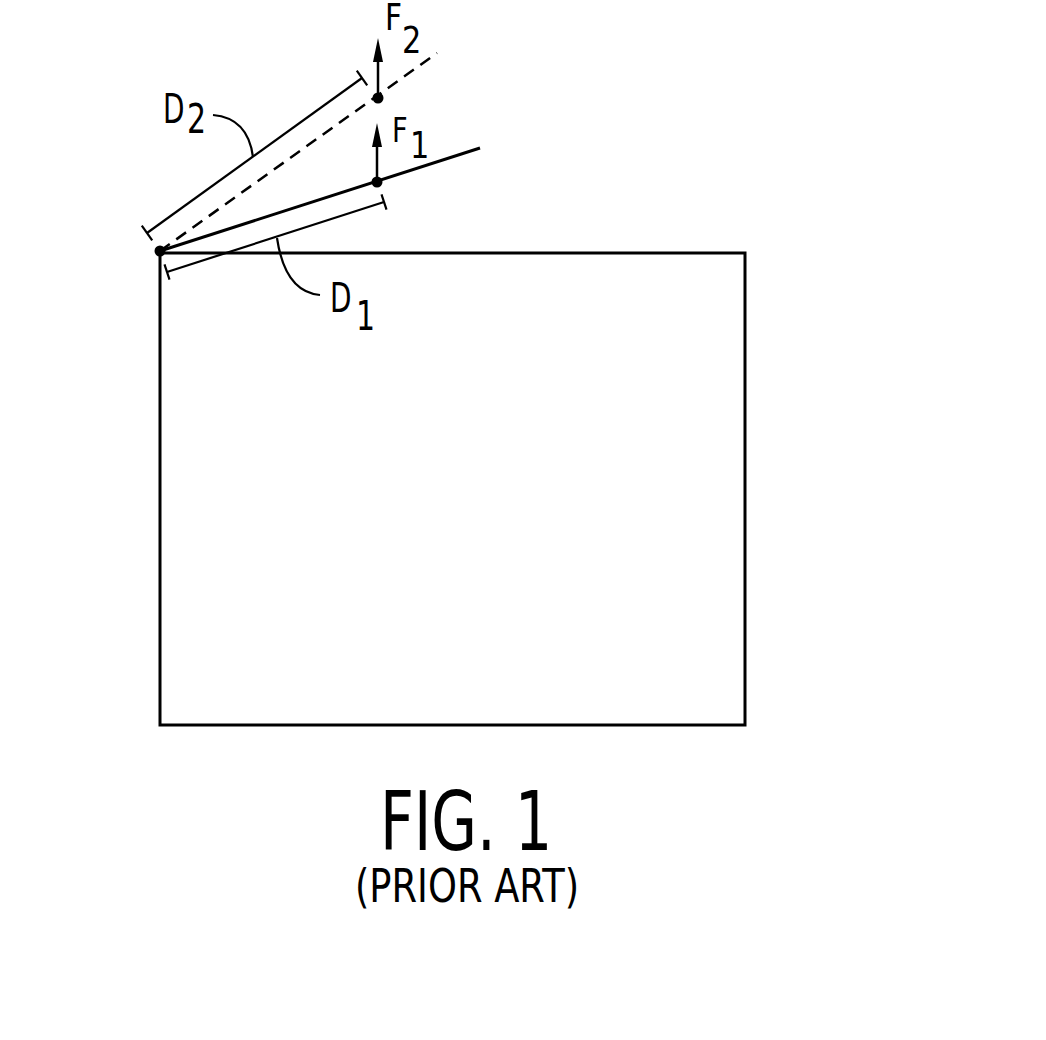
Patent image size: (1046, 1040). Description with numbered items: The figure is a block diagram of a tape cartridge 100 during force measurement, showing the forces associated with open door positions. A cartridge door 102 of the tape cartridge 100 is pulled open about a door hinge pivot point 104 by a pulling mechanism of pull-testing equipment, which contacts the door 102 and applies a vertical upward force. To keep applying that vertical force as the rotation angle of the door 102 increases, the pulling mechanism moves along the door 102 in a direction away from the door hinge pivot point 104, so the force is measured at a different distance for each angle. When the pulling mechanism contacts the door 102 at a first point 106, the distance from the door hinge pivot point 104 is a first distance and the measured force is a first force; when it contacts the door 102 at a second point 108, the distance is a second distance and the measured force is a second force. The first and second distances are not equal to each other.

The tape cartridge 100 is at (823, 257).
The cartridge door 102 is at (480, 148).
The door hinge pivot point 104 is at (160, 251).
The point 106 is at (377, 182).
The point 108 is at (378, 98).